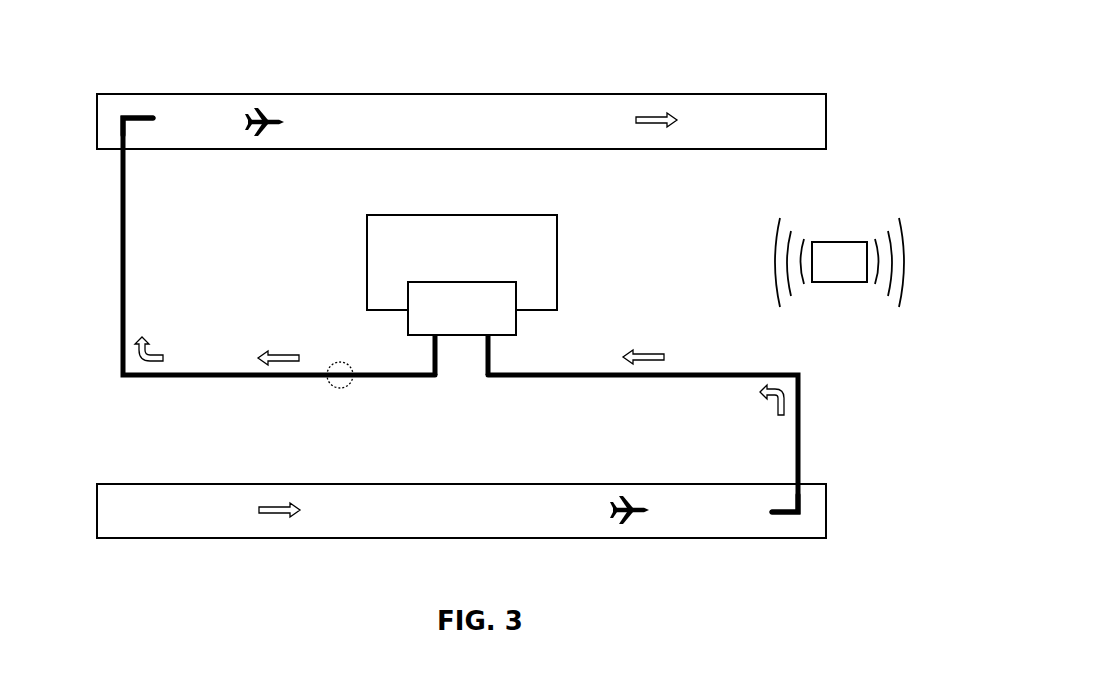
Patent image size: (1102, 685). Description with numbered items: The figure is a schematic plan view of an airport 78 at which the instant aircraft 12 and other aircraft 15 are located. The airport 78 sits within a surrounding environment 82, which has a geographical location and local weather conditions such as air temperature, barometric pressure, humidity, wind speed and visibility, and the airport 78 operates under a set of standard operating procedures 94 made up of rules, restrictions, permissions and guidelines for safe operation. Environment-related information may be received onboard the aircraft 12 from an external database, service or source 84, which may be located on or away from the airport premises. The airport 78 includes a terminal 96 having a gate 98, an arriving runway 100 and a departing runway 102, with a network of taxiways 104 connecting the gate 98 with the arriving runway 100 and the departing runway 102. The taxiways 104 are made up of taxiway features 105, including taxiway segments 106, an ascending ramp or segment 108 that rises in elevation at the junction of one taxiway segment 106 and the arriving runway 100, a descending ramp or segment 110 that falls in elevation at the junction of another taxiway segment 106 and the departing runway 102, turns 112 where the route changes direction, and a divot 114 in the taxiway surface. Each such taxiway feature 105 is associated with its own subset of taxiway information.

The airport 78 is at (510, 80).
The taxiway features 105 is at (510, 80).
The departing runway 102 is at (443, 131).
The arriving runway 100 is at (443, 521).
The aircraft 12 is at (237, 111).
The other aircraft 15 is at (653, 521).
The taxiways 104 is at (475, 315).
The taxiway segment 106 is at (127, 250).
The descending ramp or segment 110 is at (140, 116).
The ascending ramp or segment 108 is at (785, 516).
The turn 112 is at (121, 378).
The divot 114 is at (336, 387).
The terminal 96 is at (449, 259).
The gate 98 is at (449, 318).
The environment 82 is at (657, 249).
The standard operating procedures 94 is at (849, 239).
The external database, service or source 84 is at (828, 273).